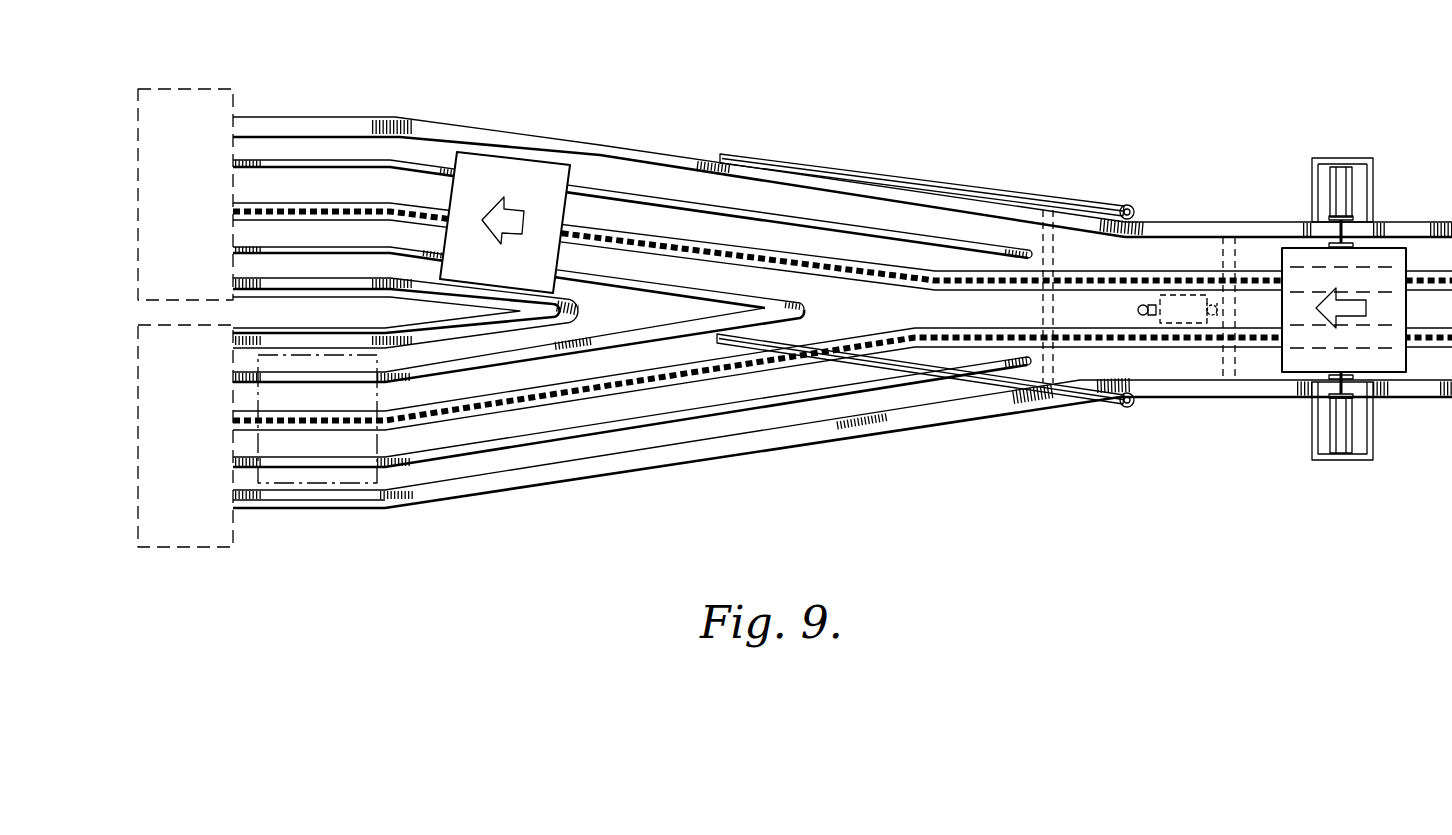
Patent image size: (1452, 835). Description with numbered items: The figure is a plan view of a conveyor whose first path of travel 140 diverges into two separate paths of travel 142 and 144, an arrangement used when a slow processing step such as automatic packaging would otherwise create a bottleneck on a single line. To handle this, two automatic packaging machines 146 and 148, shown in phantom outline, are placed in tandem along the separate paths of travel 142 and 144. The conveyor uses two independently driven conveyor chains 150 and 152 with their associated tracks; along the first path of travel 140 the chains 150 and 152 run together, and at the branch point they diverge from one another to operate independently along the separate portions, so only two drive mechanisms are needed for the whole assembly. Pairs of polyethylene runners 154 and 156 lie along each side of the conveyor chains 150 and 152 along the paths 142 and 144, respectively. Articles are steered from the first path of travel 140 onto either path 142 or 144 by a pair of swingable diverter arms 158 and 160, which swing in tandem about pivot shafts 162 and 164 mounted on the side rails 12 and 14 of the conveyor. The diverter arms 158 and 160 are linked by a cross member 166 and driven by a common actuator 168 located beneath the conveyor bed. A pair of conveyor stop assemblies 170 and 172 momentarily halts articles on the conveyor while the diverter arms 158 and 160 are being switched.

The side rail 12 is at (1180, 400).
The side rail 14 is at (1200, 220).
The first path of travel 140 is at (1268, 419).
The separate path of travel 142 is at (530, 497).
The separate path of travel 144 is at (462, 118).
The automatic packaging machine 146 is at (190, 548).
The automatic packaging machine 148 is at (192, 89).
The conveyor chain 150 is at (672, 380).
The conveyor chain 152 is at (672, 242).
The polyethylene runners 154 is at (440, 367).
The polyethylene runners 156 is at (360, 248).
The swingable diverter arm 158 is at (1085, 398).
The swingable diverter arm 160 is at (1082, 202).
The pivot shaft 162 is at (1138, 322).
The pivot shaft 164 is at (1130, 205).
The cross member 166 is at (1043, 238).
The common actuator 168 is at (1196, 318).
The conveyor stop assembly 170 is at (1338, 452).
The conveyor stop assembly 172 is at (1355, 172).